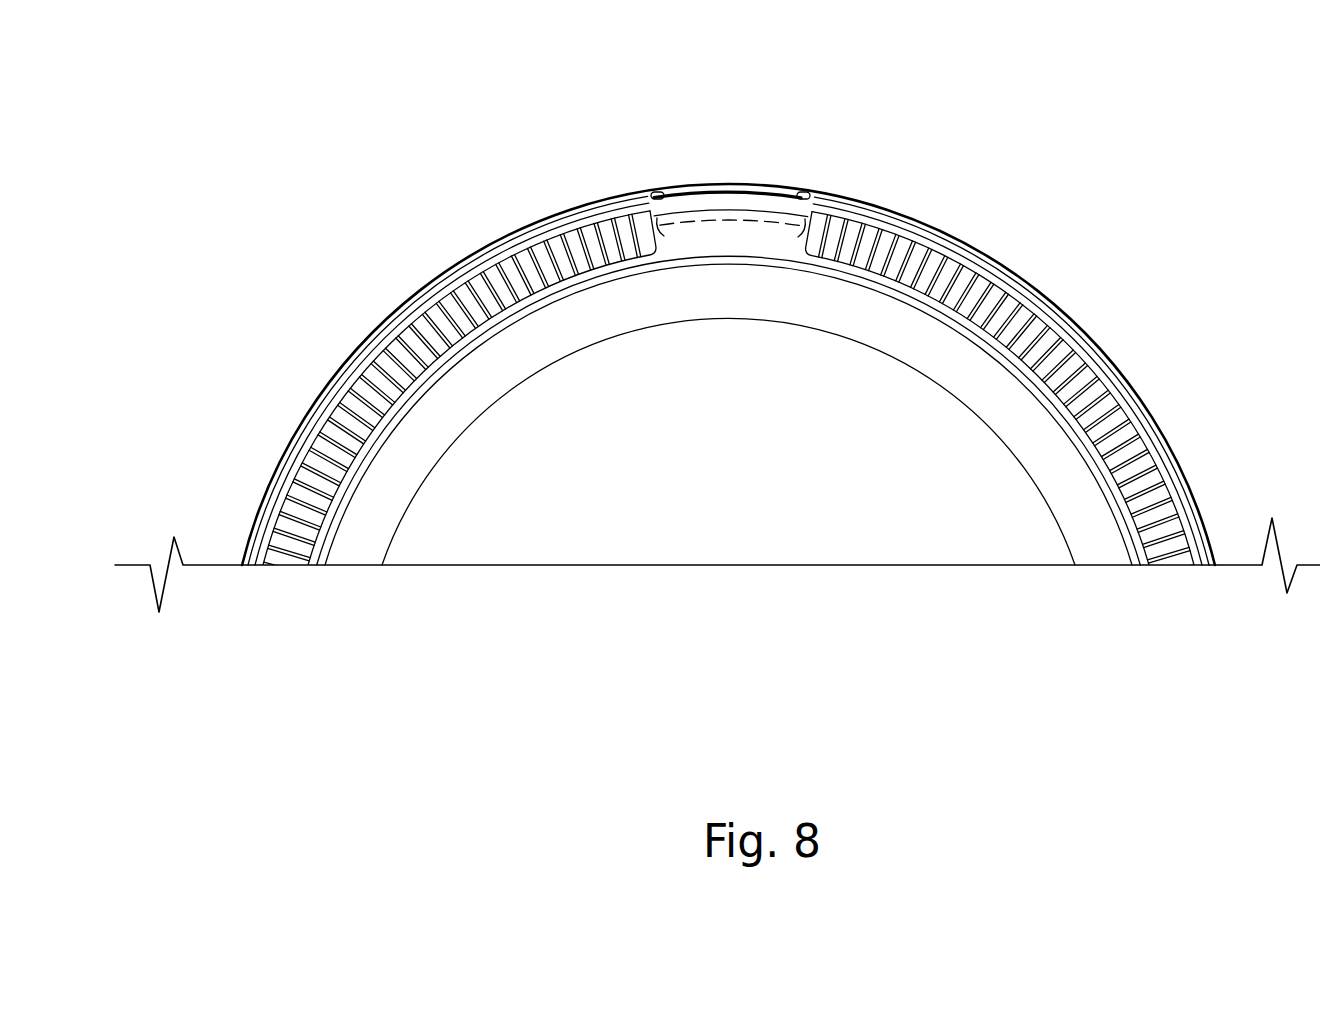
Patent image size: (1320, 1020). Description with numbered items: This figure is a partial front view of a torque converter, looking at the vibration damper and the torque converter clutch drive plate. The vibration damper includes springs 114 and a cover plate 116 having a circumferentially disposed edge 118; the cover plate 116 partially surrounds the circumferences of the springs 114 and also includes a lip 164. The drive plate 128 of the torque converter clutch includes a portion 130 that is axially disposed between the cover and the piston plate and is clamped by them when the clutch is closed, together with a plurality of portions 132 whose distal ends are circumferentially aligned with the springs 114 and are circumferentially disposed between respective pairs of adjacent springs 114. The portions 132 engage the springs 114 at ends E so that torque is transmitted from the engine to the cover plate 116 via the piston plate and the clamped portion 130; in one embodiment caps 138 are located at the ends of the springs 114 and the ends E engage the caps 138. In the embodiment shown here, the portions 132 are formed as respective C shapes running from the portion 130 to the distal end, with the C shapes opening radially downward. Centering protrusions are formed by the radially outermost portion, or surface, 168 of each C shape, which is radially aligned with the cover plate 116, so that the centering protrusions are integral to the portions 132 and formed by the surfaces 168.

The springs 114 is at (480, 290).
The cover plate 116 is at (972, 227).
The circumferentially disposed edge 118 is at (1012, 295).
The drive plate 128 is at (423, 381).
The portion 130 is at (592, 310).
The portions 132 is at (748, 218).
The caps 138 is at (646, 227).
The lip 164 is at (1047, 395).
The radially outermost surface 168 is at (738, 235).
The ends E is at (679, 207).